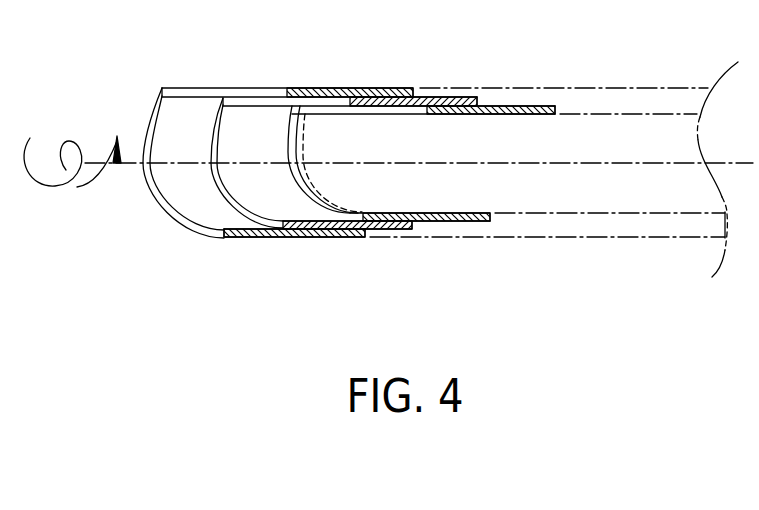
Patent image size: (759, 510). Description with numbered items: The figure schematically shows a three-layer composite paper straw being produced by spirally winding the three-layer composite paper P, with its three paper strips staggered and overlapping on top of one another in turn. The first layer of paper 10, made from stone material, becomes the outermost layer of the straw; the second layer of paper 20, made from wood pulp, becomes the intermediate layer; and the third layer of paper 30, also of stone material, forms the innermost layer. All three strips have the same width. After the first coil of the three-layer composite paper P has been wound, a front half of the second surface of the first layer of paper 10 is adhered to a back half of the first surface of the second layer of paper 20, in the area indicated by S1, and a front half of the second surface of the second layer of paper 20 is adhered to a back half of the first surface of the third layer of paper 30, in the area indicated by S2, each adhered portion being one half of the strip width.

The first layer of paper 10 is at (255, 92).
The second layer of paper 20 is at (250, 100).
The third layer of paper 30 is at (371, 92).
The adhesion area of first and second layers S1 is at (331, 104).
The adhesion area of second and third layers S2 is at (394, 120).
The three-layer composite paper P is at (506, 244).